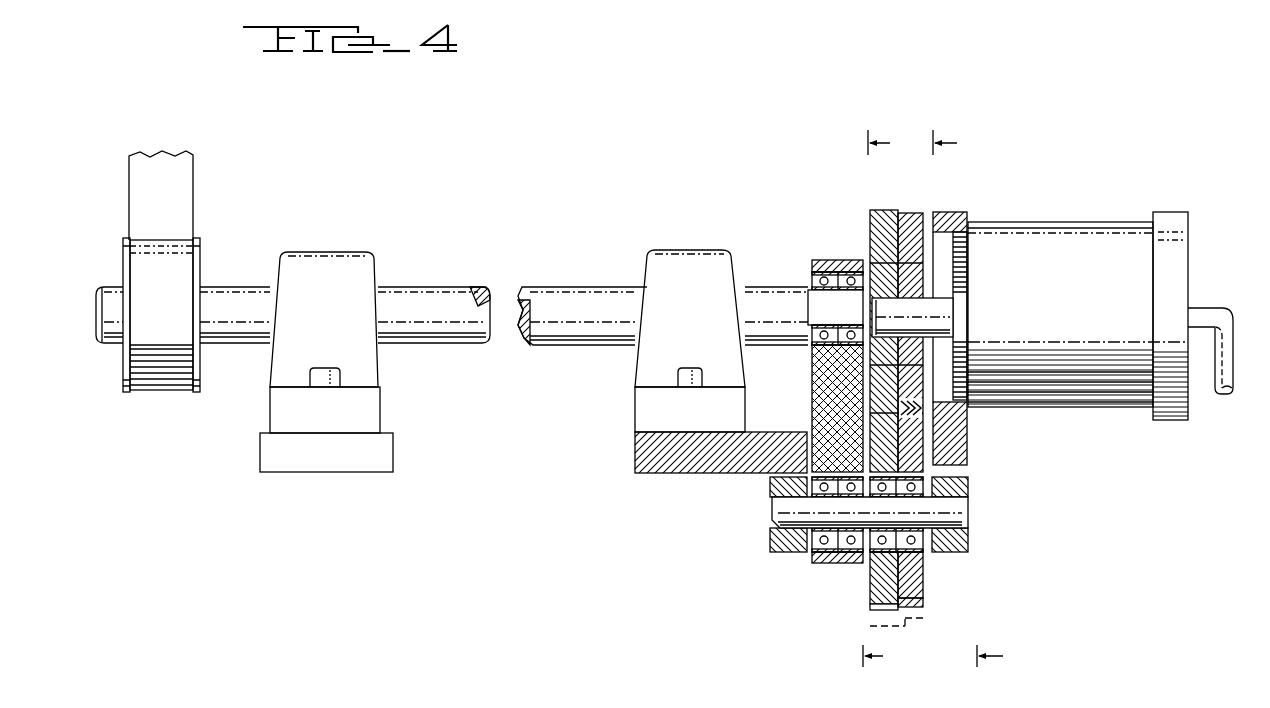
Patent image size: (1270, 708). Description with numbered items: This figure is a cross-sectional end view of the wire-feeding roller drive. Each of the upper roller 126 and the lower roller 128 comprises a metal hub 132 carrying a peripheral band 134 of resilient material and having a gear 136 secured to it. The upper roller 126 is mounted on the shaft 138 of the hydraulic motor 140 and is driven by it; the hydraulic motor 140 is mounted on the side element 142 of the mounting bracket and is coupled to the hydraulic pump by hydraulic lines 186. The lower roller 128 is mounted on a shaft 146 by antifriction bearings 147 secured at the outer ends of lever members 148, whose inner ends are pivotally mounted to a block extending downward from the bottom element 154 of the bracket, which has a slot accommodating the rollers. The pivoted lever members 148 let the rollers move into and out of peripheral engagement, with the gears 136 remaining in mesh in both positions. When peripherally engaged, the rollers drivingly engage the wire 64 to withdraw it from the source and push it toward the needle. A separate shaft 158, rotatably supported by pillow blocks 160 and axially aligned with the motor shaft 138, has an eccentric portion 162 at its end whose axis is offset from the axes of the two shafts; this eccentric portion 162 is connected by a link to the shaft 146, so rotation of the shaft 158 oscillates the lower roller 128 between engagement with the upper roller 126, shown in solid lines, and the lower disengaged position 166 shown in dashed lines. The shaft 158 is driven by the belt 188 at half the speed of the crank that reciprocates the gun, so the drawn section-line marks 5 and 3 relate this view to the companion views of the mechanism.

The belt 188 is at (186, 183).
The pillow blocks 160 is at (312, 262).
The shaft 158 is at (586, 316).
The bottom element 154 is at (642, 452).
The eccentric portion 162 is at (835, 366).
The gear 136 is at (870, 236).
The peripheral band 134 is at (910, 213).
The upper roller 126 is at (924, 271).
The shaft 138 is at (942, 313).
The hydraulic motor 140 is at (1091, 294).
The hydraulic lines 186 is at (1206, 308).
The wire 64 is at (926, 412).
The metal hub 132 is at (966, 442).
The side element 142 is at (967, 460).
The shaft 146 is at (788, 512).
The lever members 148 is at (778, 539).
The antifriction bearings 147 is at (935, 548).
The lower roller 128 is at (924, 558).
The disengaged position 166 is at (915, 622).
The section line 5- 5 is at (885, 399).
The section line 3- 3 is at (983, 399).